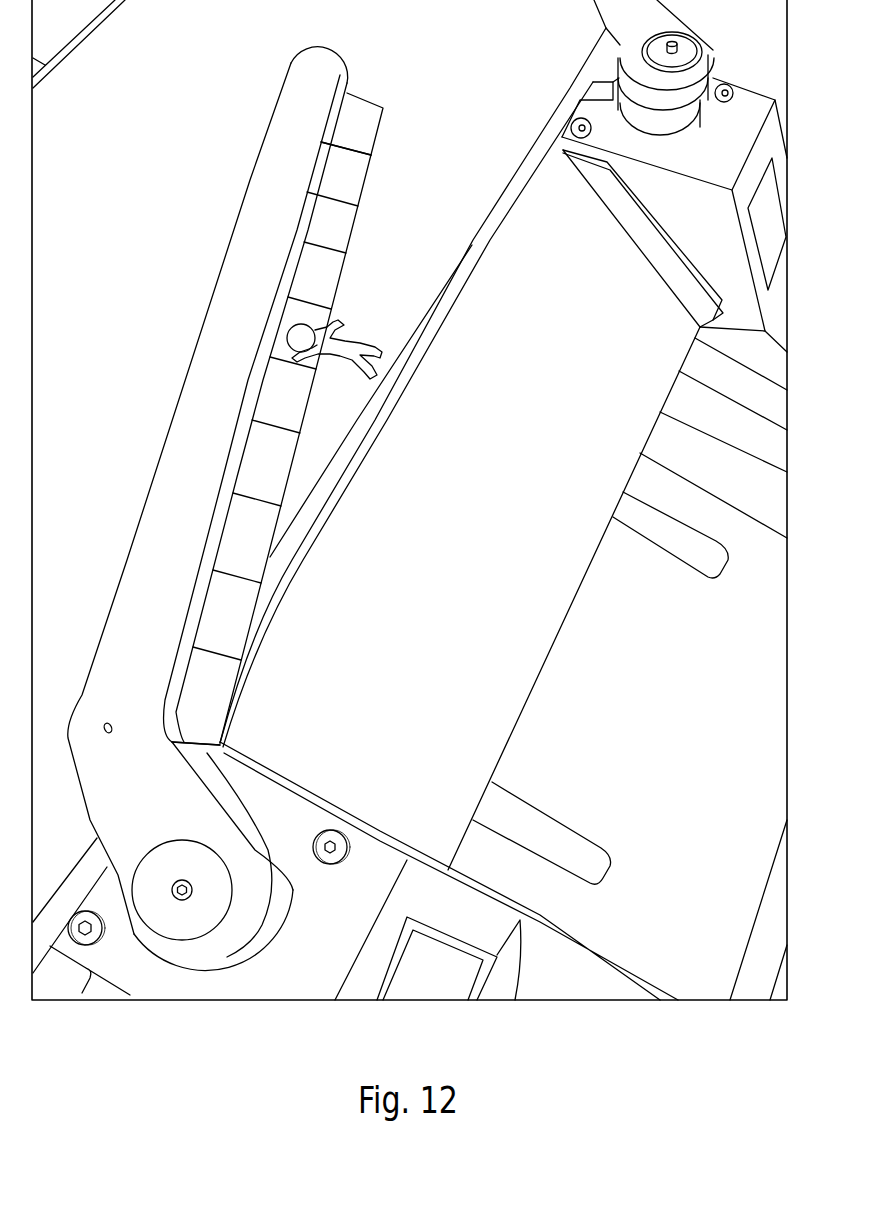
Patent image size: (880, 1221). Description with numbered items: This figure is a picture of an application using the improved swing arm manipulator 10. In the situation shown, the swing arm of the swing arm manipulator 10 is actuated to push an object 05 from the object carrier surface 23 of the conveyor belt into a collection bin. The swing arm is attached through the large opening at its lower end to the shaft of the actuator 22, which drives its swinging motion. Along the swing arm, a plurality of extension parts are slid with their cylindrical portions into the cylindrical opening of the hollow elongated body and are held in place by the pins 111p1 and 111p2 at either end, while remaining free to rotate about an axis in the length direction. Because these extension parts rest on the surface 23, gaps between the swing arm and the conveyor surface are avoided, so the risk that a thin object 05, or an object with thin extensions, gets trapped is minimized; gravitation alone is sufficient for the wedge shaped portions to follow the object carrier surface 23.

The swing arm manipulator 10 is at (207, 516).
The actuator 22 is at (201, 880).
The object carrier surface 23 is at (95, 497).
The object 05 is at (380, 344).
The pin 111p1 is at (104, 714).
The pin 111p2 is at (326, 58).